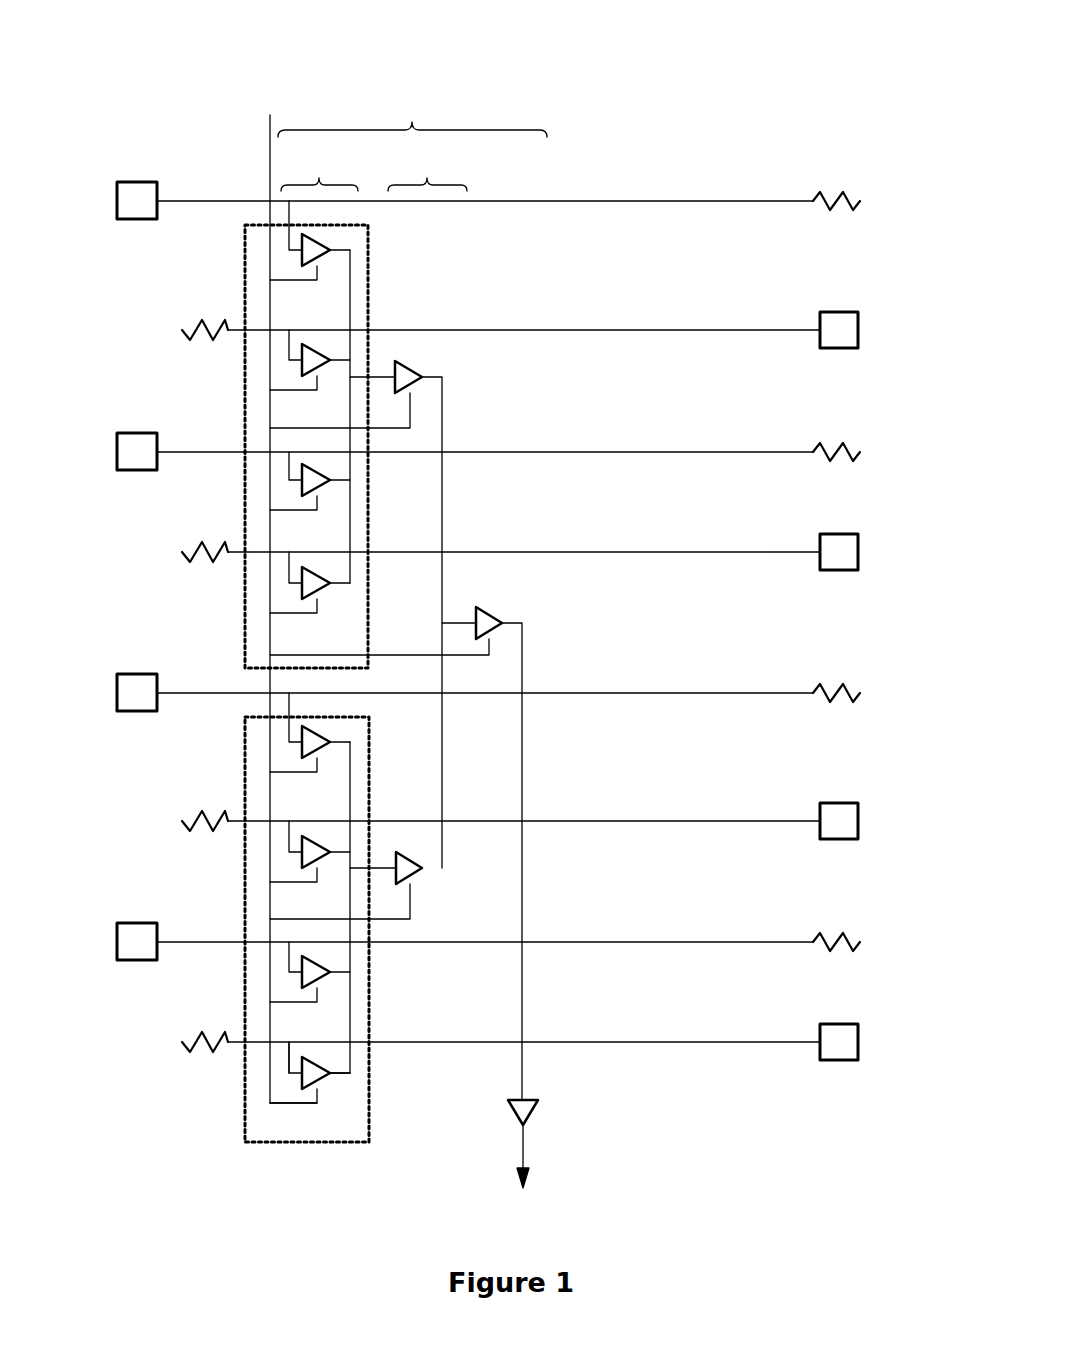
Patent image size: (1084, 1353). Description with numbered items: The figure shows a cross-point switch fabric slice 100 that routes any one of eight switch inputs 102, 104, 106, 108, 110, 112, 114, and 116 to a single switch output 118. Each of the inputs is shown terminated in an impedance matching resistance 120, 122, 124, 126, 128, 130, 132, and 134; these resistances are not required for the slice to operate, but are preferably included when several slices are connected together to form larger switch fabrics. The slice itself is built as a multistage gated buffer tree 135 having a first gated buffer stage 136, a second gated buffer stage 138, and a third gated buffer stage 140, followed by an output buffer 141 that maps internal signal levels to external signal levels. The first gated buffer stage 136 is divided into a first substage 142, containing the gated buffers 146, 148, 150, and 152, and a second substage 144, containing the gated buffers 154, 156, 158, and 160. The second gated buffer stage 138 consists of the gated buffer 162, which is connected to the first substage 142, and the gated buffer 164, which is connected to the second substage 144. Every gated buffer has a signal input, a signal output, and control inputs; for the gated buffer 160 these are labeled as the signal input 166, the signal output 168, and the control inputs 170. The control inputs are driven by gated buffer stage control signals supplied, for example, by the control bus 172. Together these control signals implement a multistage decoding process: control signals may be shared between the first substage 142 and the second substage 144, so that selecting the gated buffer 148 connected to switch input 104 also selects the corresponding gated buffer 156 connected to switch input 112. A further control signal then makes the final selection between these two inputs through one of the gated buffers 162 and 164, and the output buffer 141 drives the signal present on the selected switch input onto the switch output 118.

The cross-point switch fabric slice 100 is at (780, 90).
The switch input 102 is at (135, 182).
The switch input 104 is at (862, 322).
The switch input 106 is at (135, 433).
The switch input 108 is at (862, 544).
The switch input 110 is at (135, 674).
The switch input 112 is at (862, 813).
The switch input 114 is at (135, 923).
The switch input 116 is at (862, 1034).
The switch output 118 is at (527, 1150).
The impedance matching resistance 120 is at (848, 193).
The impedance matching resistance 122 is at (197, 320).
The impedance matching resistance 124 is at (848, 444).
The impedance matching resistance 126 is at (197, 542).
The impedance matching resistance 128 is at (848, 685).
The impedance matching resistance 130 is at (197, 811).
The impedance matching resistance 132 is at (848, 934).
The impedance matching resistance 134 is at (197, 1032).
The multistage gated buffer tree 135 is at (412, 114).
The first gated buffer stage 136 is at (319, 169).
The second gated buffer stage 138 is at (427, 169).
The third gated buffer stage 140 is at (497, 613).
The output buffer 141 is at (537, 1102).
The first substage 142 is at (368, 620).
The second substage 144 is at (369, 1005).
The gated buffer 146 is at (325, 255).
The gated buffer 148 is at (325, 365).
The gated buffer 150 is at (325, 485).
The gated buffer 152 is at (325, 588).
The gated buffer 154 is at (325, 747).
The gated buffer 156 is at (325, 857).
The gated buffer 158 is at (325, 977).
The gated buffer 160 is at (325, 1078).
The gated buffer 162 is at (413, 360).
The gated buffer 164 is at (417, 867).
The signal input 166 is at (290, 1058).
The signal output 168 is at (350, 1063).
The control inputs 170 is at (282, 1103).
The control bus 172 is at (270, 113).